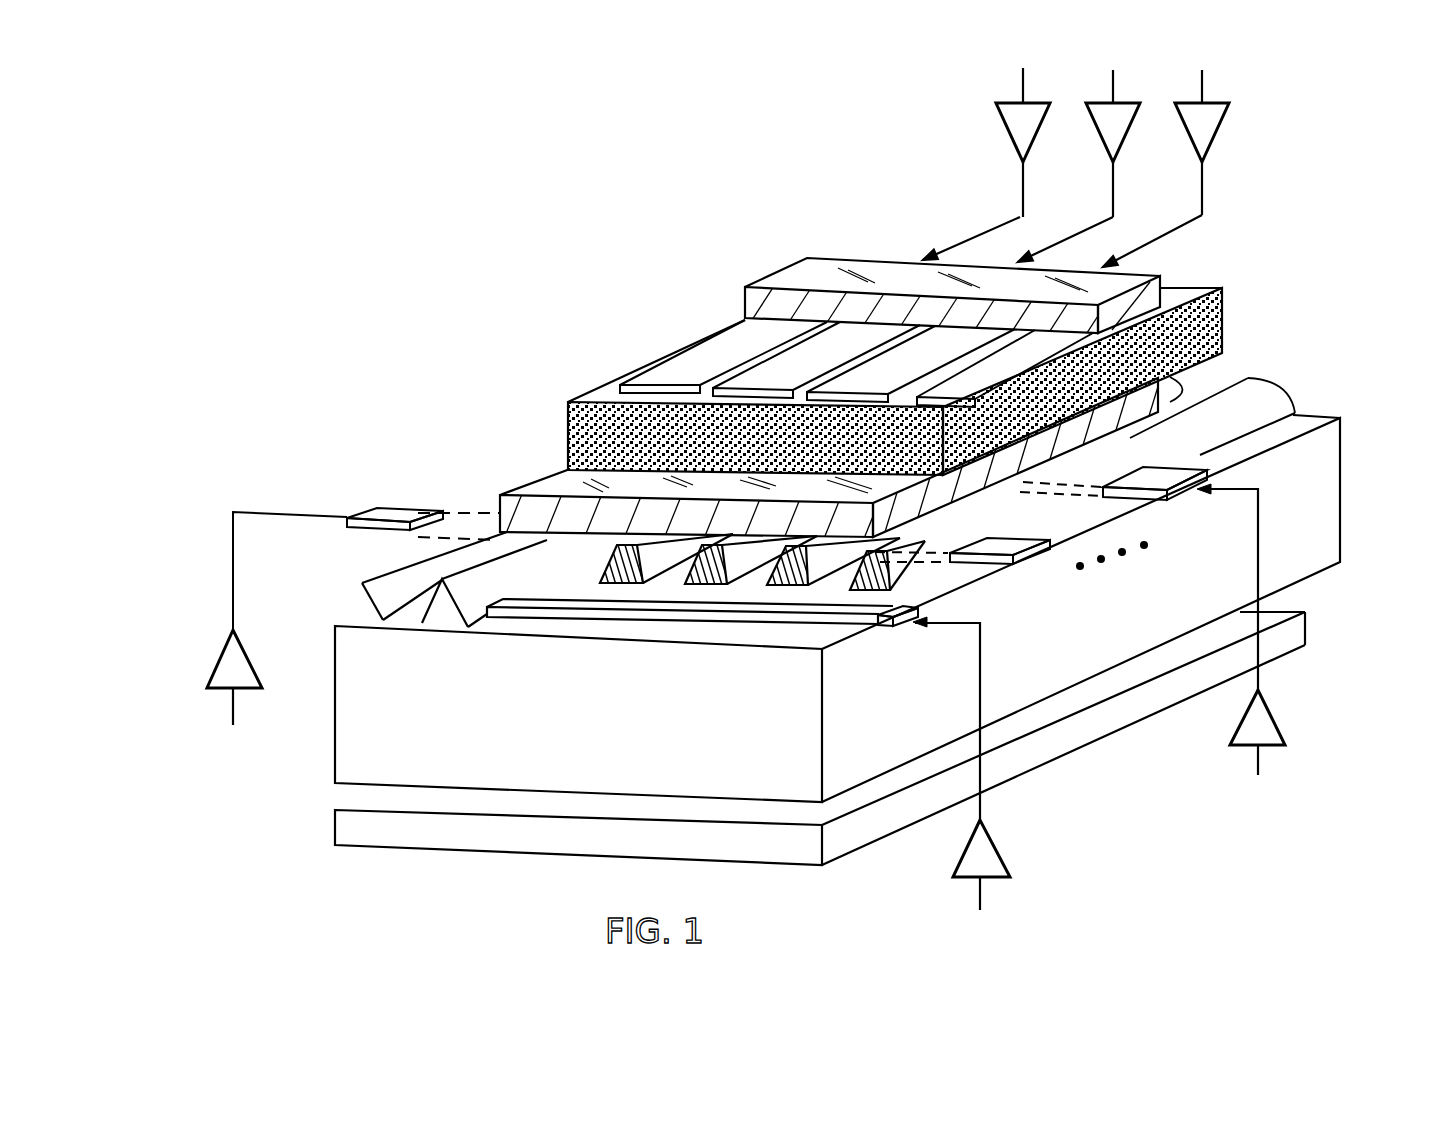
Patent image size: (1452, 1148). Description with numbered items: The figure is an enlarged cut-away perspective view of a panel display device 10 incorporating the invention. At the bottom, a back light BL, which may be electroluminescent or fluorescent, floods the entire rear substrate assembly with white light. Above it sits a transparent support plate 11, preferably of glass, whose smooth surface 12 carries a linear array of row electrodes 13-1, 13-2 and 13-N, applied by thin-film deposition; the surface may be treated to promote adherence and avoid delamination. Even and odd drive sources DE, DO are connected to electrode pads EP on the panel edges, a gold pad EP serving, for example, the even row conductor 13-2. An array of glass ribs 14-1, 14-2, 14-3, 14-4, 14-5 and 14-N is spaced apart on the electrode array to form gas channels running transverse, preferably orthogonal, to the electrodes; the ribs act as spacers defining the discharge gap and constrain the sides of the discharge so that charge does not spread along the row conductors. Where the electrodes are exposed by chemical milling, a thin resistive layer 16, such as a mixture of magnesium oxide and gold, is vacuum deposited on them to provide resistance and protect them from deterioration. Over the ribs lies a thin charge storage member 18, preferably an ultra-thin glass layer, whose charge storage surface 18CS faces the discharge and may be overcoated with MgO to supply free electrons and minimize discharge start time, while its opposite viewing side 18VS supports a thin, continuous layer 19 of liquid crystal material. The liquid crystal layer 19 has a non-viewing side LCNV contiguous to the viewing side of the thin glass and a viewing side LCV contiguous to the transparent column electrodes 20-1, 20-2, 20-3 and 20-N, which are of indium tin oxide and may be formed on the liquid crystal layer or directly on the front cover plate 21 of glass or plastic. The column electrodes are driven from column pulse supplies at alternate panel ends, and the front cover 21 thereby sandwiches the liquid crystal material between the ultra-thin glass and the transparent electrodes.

The panel display device 10 is at (480, 370).
The transparent support plate 11 is at (1305, 480).
The smooth surface 12 is at (1305, 423).
The electrode 13-1 is at (895, 613).
The electrode 13-2 is at (1023, 560).
The electrode 13-N is at (1172, 493).
The rib 14-1 is at (362, 608).
The rib 14-2 is at (440, 618).
The rib 14-3 is at (618, 584).
The rib 14-4 is at (698, 590).
The rib 14-5 is at (778, 590).
The rib 14-N is at (853, 590).
The thin resistive layer 16 is at (512, 622).
The charge storage member 18 is at (523, 508).
The viewing side 18VS is at (555, 485).
The charge storage surface 18CS is at (567, 534).
The liquid crystal layer 19 is at (1222, 308).
The transparent column electrode 20-1 is at (668, 373).
The transparent column electrode 20-2 is at (778, 372).
The transparent column electrode 20-3 is at (907, 362).
The transparent column electrode 20-N is at (955, 385).
The front cover plate 21 is at (1127, 290).
The electrode pad EP is at (397, 507).
The even drive source DE is at (200, 685).
The odd drive source DO is at (998, 880).
The back light BL is at (390, 838).
The viewing side of liquid crystal layer LCV is at (1180, 300).
The non-viewing side of liquid crystal layer LCNV is at (1203, 357).